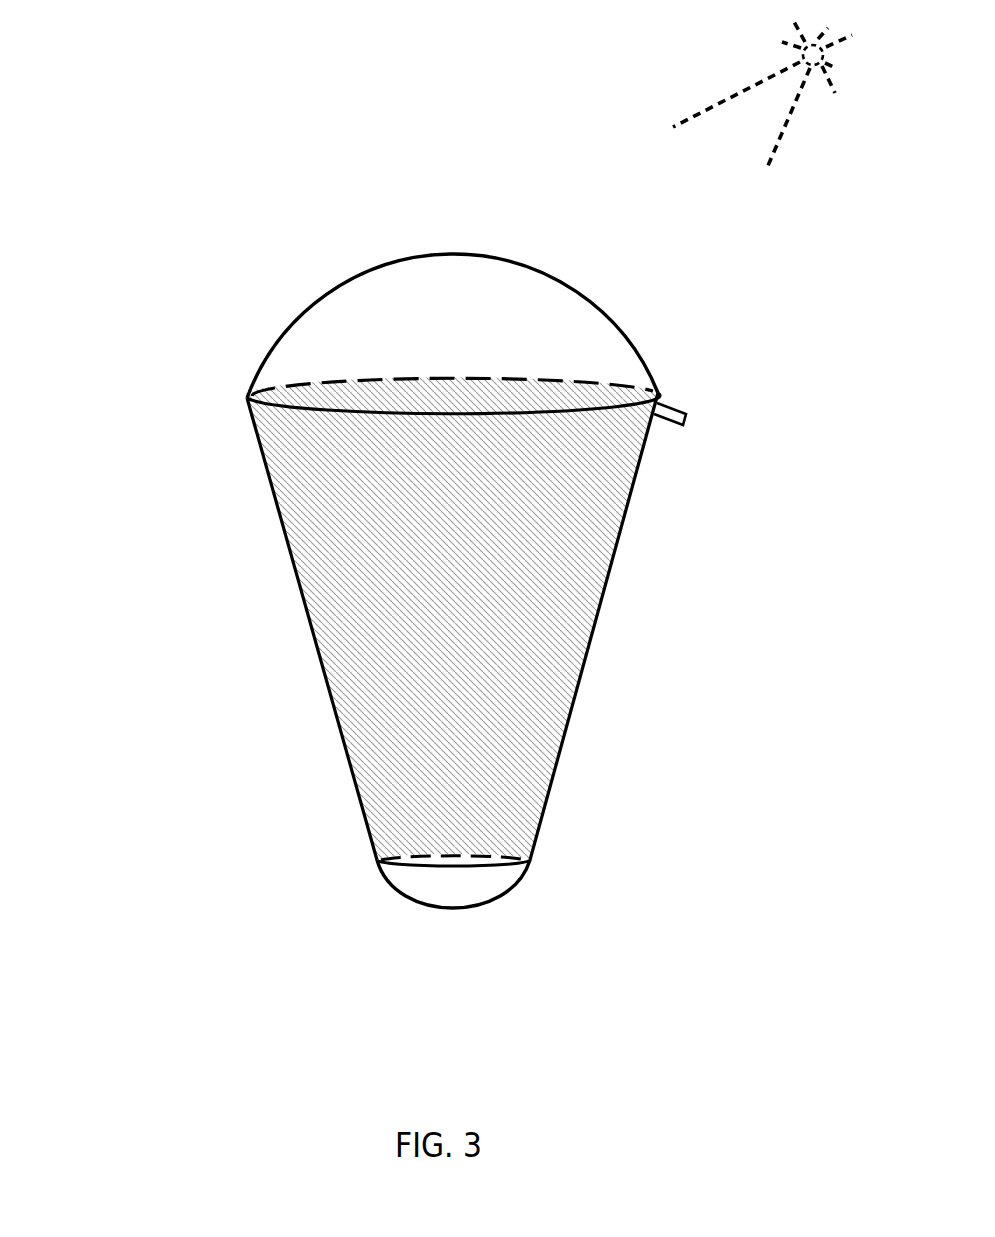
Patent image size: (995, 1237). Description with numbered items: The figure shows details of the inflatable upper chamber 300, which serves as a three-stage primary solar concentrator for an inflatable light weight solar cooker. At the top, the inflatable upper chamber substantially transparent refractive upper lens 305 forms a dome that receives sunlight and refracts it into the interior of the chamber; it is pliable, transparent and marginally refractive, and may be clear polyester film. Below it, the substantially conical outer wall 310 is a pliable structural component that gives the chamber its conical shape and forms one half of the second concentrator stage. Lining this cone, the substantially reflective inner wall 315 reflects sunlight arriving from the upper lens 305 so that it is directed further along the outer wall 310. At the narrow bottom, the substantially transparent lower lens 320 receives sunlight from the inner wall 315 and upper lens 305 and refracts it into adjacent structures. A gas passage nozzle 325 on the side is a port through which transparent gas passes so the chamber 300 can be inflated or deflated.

The inflatable upper chamber 300 is at (143, 87).
The inflatable upper chamber substantially transparent refractive upper lens 305 is at (347, 282).
The substantially conical outer wall 310 is at (250, 422).
The substantially reflective inner wall 315 is at (308, 542).
The substantially transparent lower lens 320 is at (390, 884).
The gas passage nozzle 325 is at (692, 408).